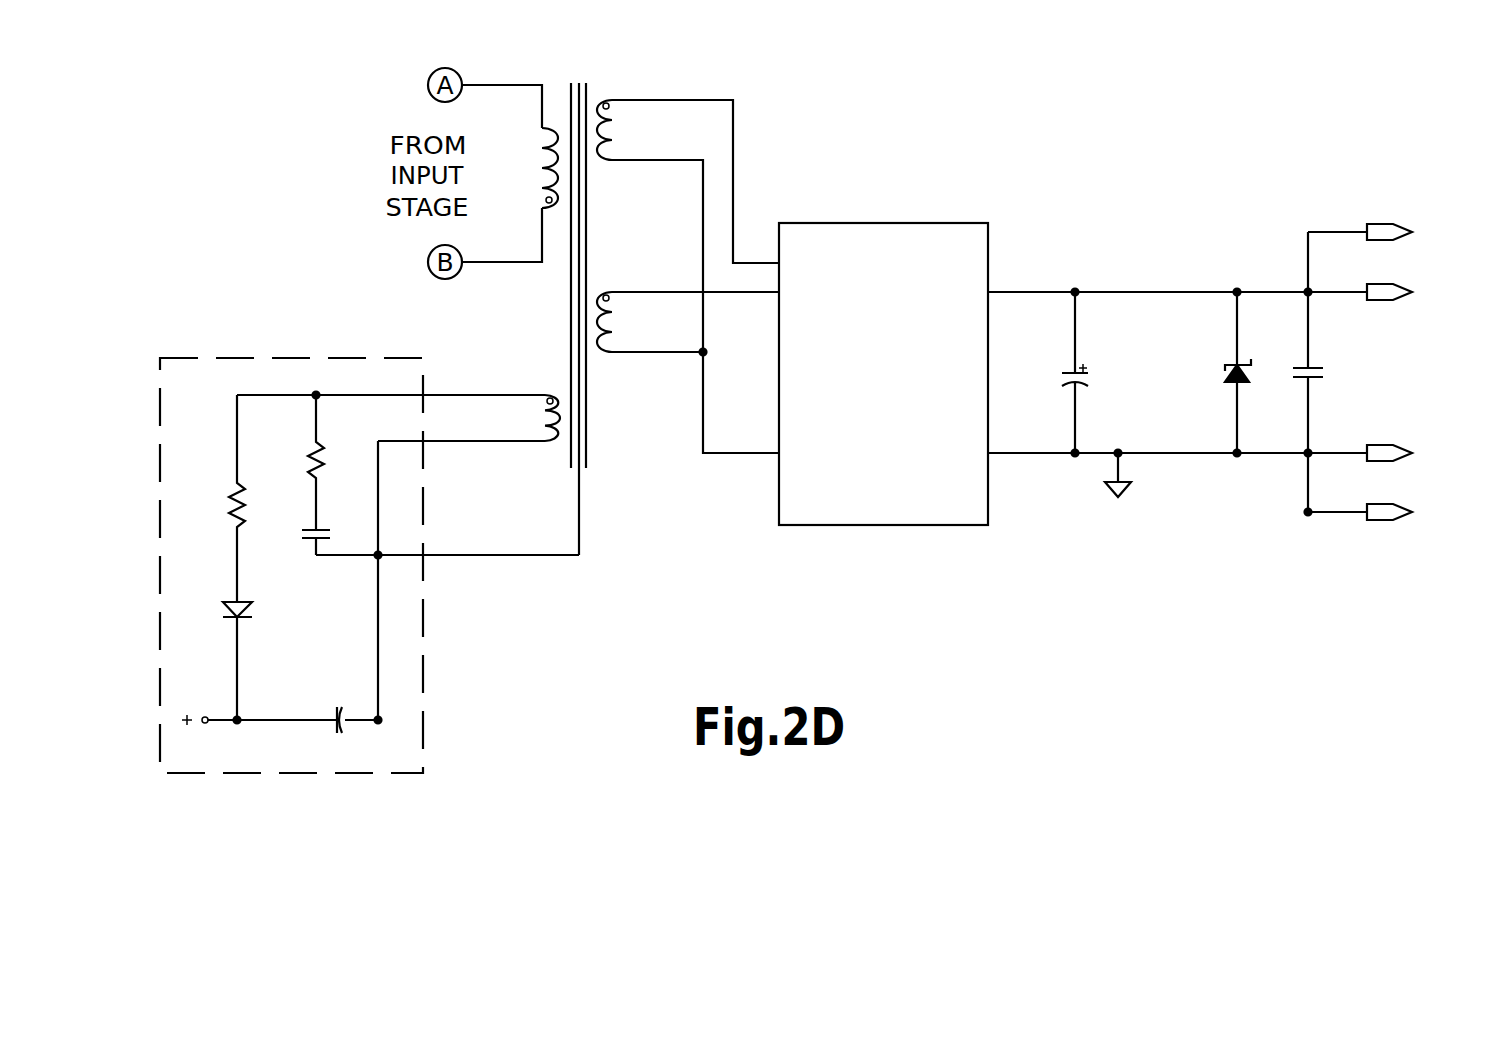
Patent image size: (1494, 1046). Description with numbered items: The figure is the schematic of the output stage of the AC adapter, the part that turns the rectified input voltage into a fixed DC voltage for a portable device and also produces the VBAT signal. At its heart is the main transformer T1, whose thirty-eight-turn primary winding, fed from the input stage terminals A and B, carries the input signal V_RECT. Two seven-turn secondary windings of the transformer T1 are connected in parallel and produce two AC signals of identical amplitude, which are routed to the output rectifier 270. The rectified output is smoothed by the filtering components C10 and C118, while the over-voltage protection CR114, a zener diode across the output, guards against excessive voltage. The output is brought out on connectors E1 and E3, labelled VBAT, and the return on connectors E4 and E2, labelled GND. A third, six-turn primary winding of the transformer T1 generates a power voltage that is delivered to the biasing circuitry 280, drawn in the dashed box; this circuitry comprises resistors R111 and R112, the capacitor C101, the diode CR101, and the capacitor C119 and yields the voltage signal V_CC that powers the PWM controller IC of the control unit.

The output rectifier 270 is at (895, 525).
The biasing circuitry 280 is at (328, 565).
The main transformer T1 is at (574, 302).
The filtering component C10 is at (1039, 373).
The over-voltage protection CR114 is at (1198, 373).
The filtering component C118 is at (1349, 374).
The VBAT connector E1 is at (1427, 276).
The GND connector E2 is at (1423, 498).
The VBAT connector E3 is at (1427, 217).
The GND connector E4 is at (1423, 438).
The resistor R111 is at (346, 461).
The resistor R112 is at (206, 498).
The capacitor C101 is at (297, 559).
The diode CR101 is at (293, 661).
The capacitor C119 is at (333, 737).